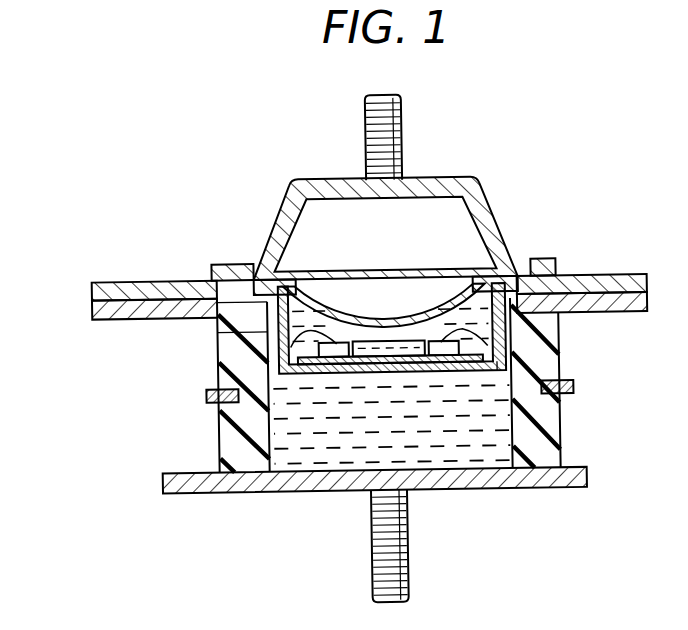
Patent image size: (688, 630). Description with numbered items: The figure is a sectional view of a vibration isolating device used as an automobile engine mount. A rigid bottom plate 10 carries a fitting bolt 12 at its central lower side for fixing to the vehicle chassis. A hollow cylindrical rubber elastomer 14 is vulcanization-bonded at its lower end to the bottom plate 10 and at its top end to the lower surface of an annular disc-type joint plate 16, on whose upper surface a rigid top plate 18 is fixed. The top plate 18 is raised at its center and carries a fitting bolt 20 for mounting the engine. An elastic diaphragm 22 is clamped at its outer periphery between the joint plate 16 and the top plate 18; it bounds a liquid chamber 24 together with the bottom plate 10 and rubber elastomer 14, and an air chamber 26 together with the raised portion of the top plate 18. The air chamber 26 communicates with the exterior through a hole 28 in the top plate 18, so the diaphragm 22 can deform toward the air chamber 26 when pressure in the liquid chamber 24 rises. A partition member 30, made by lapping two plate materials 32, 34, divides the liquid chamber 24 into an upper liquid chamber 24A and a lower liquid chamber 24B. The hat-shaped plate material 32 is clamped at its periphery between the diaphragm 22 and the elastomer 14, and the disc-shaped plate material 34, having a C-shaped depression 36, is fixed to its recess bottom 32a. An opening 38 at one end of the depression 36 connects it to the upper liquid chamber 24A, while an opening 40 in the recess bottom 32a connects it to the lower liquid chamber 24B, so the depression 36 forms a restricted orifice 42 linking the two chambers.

The bottom plate 10 is at (530, 492).
The fitting bolt 12 is at (412, 535).
The rubber elastomer 14 is at (217, 452).
The joint plate 16 is at (100, 318).
The top plate 18 is at (283, 208).
The fitting bolt 20 is at (366, 125).
The elastic diaphragm 22 is at (281, 254).
The liquid chamber 24 is at (363, 430).
The upper liquid chamber 24A is at (503, 262).
The lower liquid chamber 24B is at (307, 453).
The air chamber 26 is at (395, 250).
The hole 28 is at (497, 228).
The partition member 30 is at (530, 327).
The plate material 32 is at (500, 368).
The recess bottom 32a is at (515, 463).
The plate material 34 is at (267, 360).
The depression 36 is at (267, 338).
The opening 38 is at (530, 352).
The opening 40 is at (250, 417).
The orifice 42 is at (508, 432).